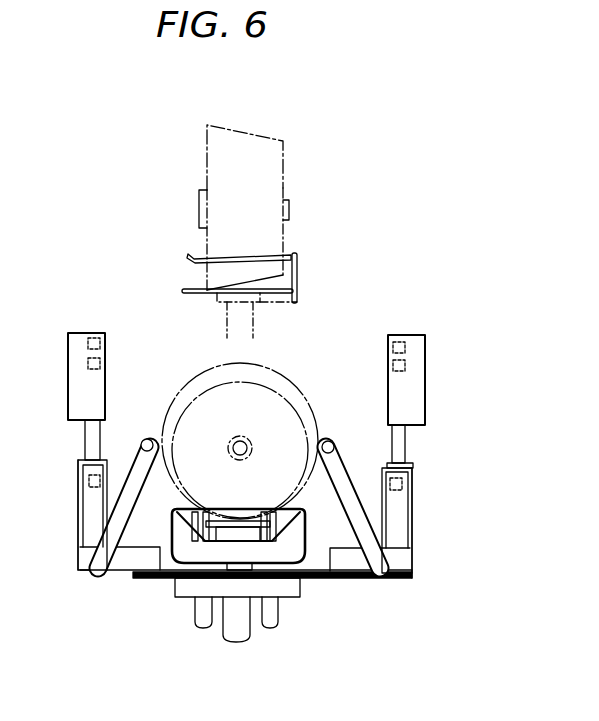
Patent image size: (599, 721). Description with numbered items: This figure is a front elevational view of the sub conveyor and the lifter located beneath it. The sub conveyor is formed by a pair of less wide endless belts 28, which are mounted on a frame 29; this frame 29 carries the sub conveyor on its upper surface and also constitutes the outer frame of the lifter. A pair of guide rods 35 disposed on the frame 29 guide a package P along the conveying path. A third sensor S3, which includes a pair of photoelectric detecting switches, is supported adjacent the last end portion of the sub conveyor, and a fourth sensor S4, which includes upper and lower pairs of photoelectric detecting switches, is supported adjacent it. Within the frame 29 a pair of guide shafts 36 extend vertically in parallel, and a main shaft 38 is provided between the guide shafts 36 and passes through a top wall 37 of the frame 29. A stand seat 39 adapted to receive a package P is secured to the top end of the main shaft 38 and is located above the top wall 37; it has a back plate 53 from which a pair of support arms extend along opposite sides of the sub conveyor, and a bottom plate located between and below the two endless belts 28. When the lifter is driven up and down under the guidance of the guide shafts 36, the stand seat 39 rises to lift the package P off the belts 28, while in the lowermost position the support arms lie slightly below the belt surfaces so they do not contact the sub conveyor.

The package P is at (283, 187).
The endless belts 28 is at (260, 515).
The frame 29 is at (406, 580).
The guide rods 35 is at (146, 439).
The guide shafts 36 is at (200, 616).
The top wall 37 is at (358, 578).
The main shaft 38 is at (236, 629).
The stand seat 39 is at (297, 265).
The back plate 53 is at (297, 548).
The third sensor S3 is at (88, 483).
The fourth sensor S4 is at (88, 362).